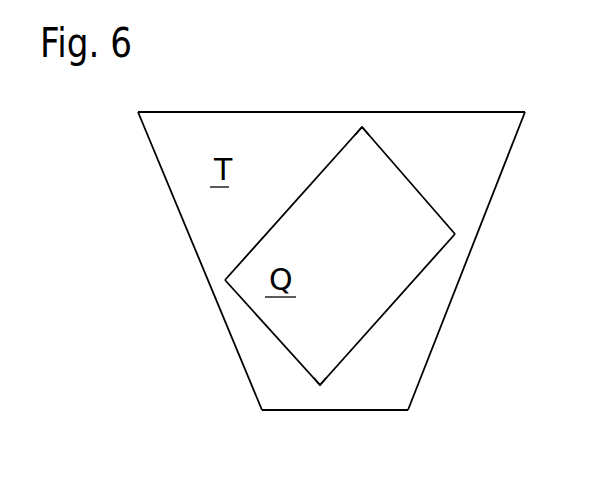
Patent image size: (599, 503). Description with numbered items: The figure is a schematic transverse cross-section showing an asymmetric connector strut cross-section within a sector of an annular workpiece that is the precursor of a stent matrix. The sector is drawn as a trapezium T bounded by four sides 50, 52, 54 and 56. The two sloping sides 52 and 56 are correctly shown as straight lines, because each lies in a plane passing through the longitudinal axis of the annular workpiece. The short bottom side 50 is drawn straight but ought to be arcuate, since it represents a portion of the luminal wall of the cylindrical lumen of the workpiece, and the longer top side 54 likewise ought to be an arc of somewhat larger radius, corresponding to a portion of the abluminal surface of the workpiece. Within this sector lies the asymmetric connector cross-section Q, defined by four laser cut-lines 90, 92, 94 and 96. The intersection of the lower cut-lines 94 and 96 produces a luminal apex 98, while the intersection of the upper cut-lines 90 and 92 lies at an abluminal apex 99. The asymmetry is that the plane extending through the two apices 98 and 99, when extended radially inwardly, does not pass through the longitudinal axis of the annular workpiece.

The side of trapezium 50 is at (370, 410).
The side of trapezium 52 is at (453, 292).
The side of trapezium 54 is at (277, 112).
The side of trapezium 56 is at (178, 213).
The laser cut-line 90 is at (305, 190).
The laser cut-line 92 is at (420, 188).
The laser cut-line 94 is at (385, 312).
The laser cut-line 96 is at (268, 337).
The luminal apex 98 is at (320, 385).
The abluminal apex 99 is at (362, 127).